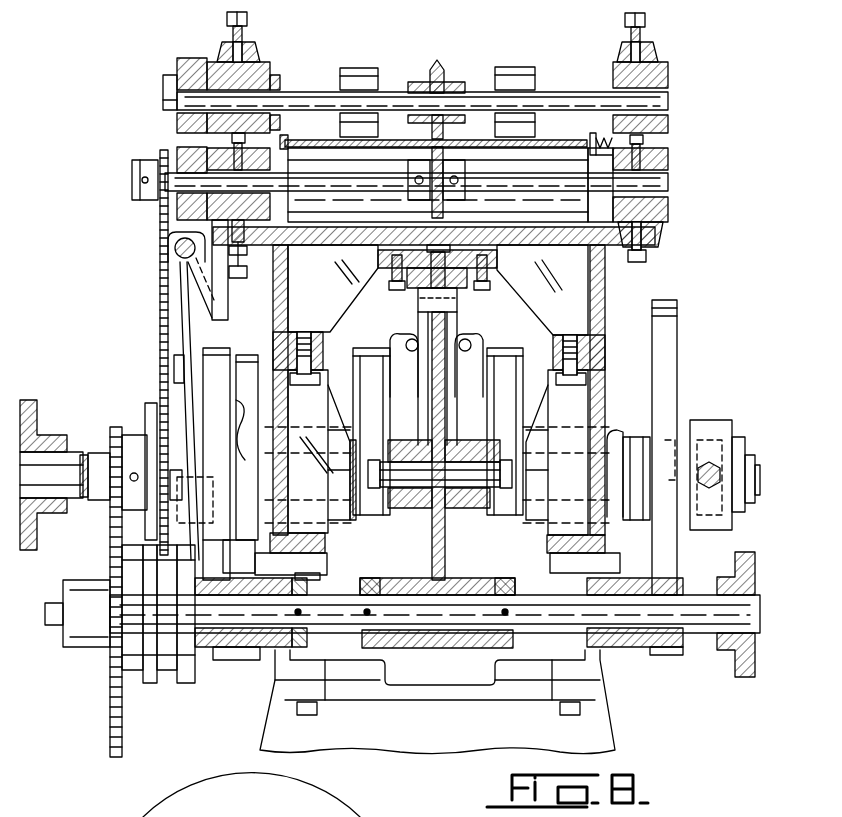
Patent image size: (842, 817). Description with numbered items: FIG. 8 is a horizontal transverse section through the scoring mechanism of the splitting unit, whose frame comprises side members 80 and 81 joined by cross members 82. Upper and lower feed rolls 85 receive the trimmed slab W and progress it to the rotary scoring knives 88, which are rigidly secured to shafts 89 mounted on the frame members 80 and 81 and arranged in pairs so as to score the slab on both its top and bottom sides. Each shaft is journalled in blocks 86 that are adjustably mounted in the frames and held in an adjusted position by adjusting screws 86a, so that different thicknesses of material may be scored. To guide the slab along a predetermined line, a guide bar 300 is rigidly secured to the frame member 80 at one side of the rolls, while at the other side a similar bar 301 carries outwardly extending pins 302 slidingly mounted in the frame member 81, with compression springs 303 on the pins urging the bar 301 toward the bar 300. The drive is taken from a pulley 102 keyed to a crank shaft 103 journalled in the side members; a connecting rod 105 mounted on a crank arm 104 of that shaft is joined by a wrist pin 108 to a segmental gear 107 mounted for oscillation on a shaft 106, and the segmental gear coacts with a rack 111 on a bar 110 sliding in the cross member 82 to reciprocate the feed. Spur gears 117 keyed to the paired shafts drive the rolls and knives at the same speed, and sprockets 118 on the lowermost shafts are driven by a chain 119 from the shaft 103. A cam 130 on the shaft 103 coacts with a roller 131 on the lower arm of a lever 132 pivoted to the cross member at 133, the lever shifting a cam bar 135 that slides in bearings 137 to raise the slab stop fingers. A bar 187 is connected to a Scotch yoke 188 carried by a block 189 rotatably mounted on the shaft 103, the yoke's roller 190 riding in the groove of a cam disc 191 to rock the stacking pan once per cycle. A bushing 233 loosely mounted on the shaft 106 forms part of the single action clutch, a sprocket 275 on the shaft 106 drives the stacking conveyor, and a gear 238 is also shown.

The side member 80 is at (283, 306).
The side member 81 is at (600, 304).
The cross member 82 is at (325, 309).
The feed roll 85 is at (358, 72).
The block 86 is at (215, 68).
The adjusting screw 86a is at (233, 22).
The scoring knife 88 is at (440, 78).
The shaft 89 is at (565, 100).
The pulley 102 is at (35, 425).
The crank shaft 103 is at (755, 475).
The crank arm 104 is at (472, 370).
The connecting rod 105 is at (462, 508).
The shaft 106 is at (510, 608).
The segmental gear 107 is at (458, 306).
The wrist pin 108 is at (403, 478).
The bar 110 is at (520, 257).
The rack 111 is at (412, 290).
The spur gear 117 is at (180, 72).
The sprocket 118 is at (142, 160).
The chain 119 is at (160, 303).
The cam 130 is at (215, 372).
The roller 131 is at (203, 510).
The lever 132 is at (190, 398).
The pivot 133 is at (176, 360).
The cam bar 135 is at (175, 248).
The bearing 137 is at (195, 272).
The bar 187 is at (718, 466).
The Scotch yoke 188 is at (710, 425).
The block 189 is at (740, 442).
The roller 190 is at (665, 455).
The cam disc 191 is at (670, 345).
The bushing 233 is at (133, 672).
The gear 238 is at (110, 537).
The sprocket 275 is at (735, 568).
The guide bar 300 is at (288, 138).
The bar 301 is at (590, 142).
The pin 302 is at (605, 130).
The compression spring 303 is at (605, 162).
The slab W is at (410, 142).